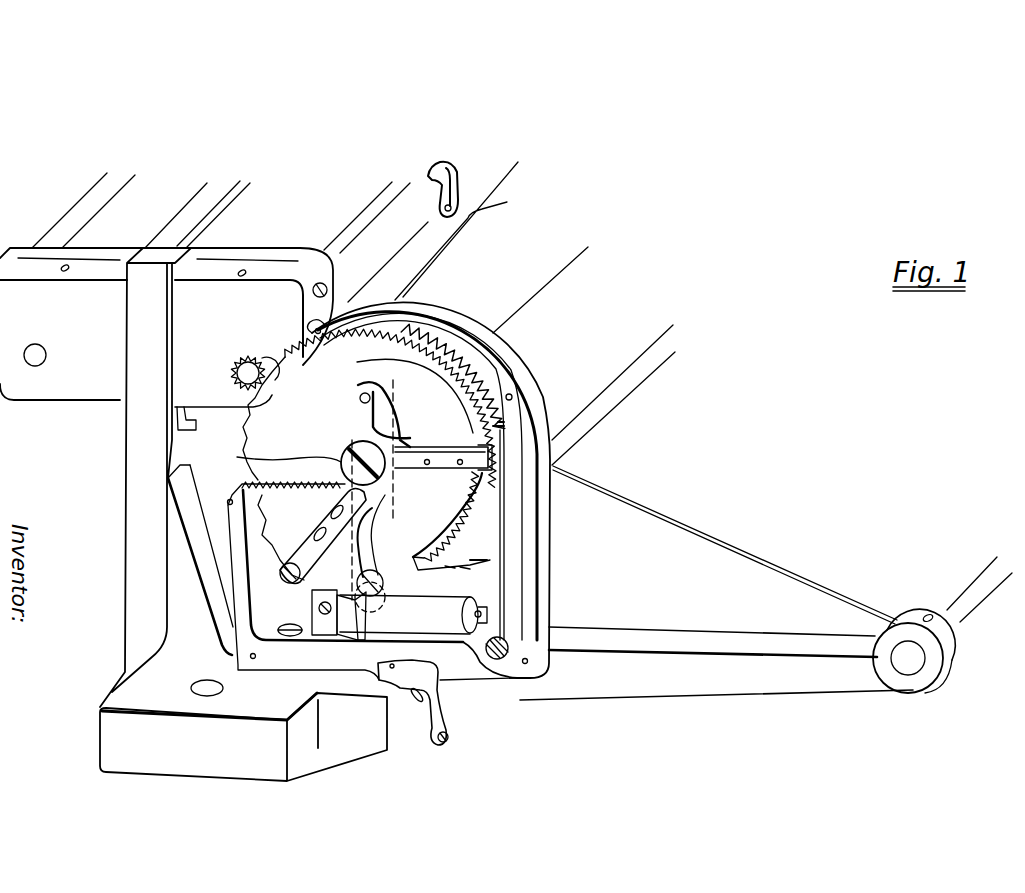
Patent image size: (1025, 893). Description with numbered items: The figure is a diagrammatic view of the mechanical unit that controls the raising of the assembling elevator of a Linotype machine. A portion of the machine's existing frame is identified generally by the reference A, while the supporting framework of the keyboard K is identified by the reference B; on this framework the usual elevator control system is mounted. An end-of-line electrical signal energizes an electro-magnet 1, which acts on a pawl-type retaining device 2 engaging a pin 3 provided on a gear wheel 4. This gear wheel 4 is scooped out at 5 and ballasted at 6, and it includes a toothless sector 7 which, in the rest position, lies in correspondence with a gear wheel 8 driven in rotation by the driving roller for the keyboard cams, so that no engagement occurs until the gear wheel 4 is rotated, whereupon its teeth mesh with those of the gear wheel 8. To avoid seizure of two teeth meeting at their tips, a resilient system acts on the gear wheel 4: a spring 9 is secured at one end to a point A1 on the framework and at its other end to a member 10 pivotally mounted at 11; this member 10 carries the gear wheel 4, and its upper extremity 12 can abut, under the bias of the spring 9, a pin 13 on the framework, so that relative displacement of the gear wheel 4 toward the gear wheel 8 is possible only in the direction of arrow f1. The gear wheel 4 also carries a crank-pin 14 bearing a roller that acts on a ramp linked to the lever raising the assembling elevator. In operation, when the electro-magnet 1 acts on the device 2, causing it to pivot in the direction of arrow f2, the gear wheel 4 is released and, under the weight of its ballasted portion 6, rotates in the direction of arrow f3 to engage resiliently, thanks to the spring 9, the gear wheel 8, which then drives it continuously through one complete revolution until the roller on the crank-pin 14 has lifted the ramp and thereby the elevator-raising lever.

The electro-magnet 1 is at (460, 597).
The retaining device 2 is at (497, 535).
The pin 3 is at (490, 458).
The gear wheel 4 is at (487, 403).
The scooped-out portion 5 is at (453, 507).
The ballasted portion 6 is at (302, 367).
The toothless sector 7 is at (287, 357).
The gear wheel 8 is at (240, 362).
The spring 9 is at (292, 476).
The member 10 is at (380, 530).
The pivot 11 is at (395, 590).
The upper extremity 12 is at (383, 395).
The pin 13 is at (368, 395).
The crank-pin 14 is at (262, 534).
The frame A is at (146, 441).
The point on the framework A1 is at (243, 482).
The supporting framework of the keyboard B is at (753, 680).
The keyboard K is at (816, 486).
The arrow f1 is at (410, 390).
The arrow f2 is at (520, 417).
The arrow f3 is at (380, 358).